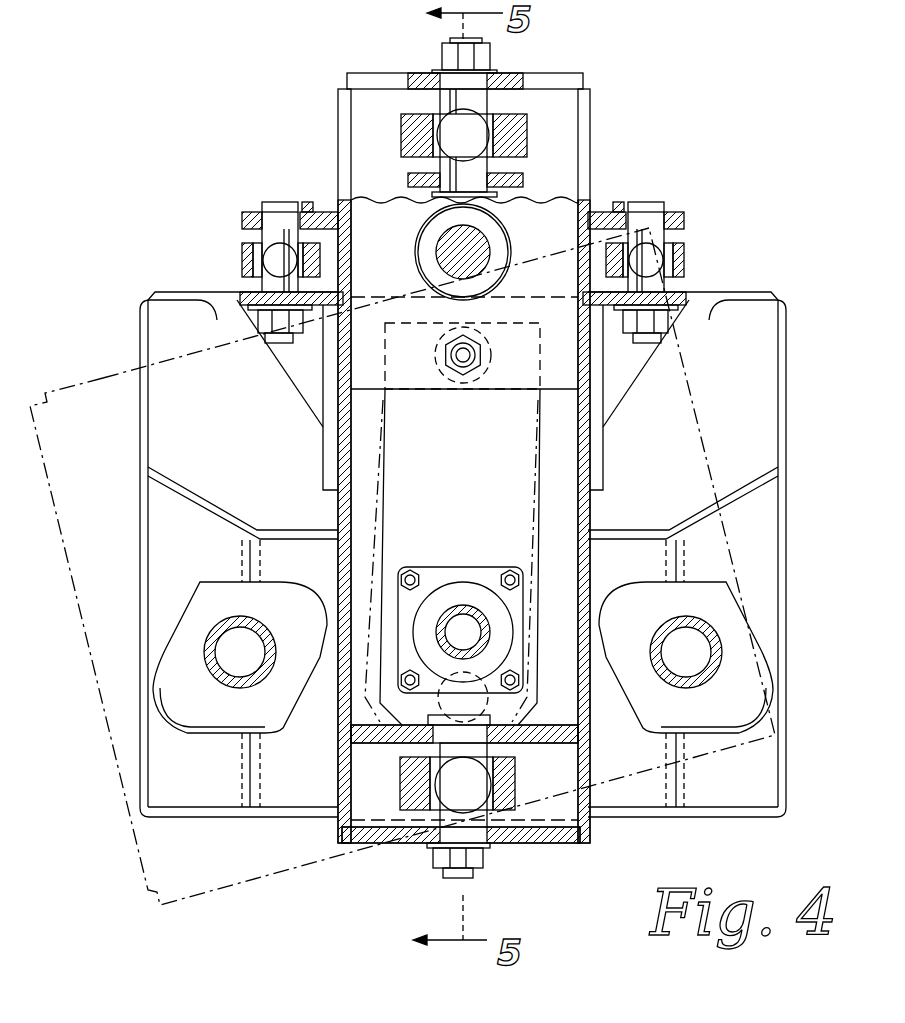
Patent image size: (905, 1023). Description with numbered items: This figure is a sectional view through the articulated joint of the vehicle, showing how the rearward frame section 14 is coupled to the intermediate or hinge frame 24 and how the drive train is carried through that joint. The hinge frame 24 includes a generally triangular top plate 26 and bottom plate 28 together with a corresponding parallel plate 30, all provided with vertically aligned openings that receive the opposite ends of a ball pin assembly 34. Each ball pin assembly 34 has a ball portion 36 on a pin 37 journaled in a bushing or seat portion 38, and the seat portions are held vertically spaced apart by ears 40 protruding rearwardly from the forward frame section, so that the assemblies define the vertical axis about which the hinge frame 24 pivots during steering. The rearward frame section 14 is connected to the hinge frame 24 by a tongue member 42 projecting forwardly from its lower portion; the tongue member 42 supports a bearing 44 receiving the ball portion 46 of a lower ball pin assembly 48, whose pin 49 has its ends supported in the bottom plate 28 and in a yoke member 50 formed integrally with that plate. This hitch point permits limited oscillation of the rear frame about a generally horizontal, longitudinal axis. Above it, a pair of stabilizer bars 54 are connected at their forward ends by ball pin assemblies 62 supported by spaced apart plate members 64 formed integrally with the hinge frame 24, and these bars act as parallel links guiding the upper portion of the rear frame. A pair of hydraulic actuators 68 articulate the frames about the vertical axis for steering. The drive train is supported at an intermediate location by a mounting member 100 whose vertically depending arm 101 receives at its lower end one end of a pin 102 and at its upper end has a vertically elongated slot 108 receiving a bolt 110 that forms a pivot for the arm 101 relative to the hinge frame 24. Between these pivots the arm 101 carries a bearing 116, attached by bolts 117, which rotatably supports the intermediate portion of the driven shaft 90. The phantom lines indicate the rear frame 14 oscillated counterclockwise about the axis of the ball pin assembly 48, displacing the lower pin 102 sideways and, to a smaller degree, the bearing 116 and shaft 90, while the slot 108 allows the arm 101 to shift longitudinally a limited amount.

The rearward frame section 14 is at (103, 375).
The intermediate or hinge frame 24 is at (592, 93).
The top plate 26 is at (565, 85).
The bottom plate 28 is at (548, 843).
The parallel plate 30 is at (523, 180).
The ball pin assembly 34 is at (433, 102).
The ball portion 36 is at (401, 135).
The pin 37 is at (442, 44).
The bushing or seat portion 38 is at (527, 120).
The ears 40 is at (527, 150).
The tongue member 42 is at (505, 785).
The bearing 44 is at (420, 770).
The ball portion 46 is at (440, 790).
The ball pin assembly 48 is at (430, 858).
The pin 49 is at (450, 880).
The yoke member 50 is at (582, 737).
The stabilizer bar 54 is at (250, 258).
The ball pin assembly 62 is at (270, 200).
The plate member 64 is at (243, 218).
The hydraulic actuator 68 is at (216, 630).
The driven shaft 90 is at (478, 612).
The mounting member or support structure 100 is at (540, 646).
The arm 101 is at (533, 585).
The pin 102 is at (500, 698).
The vertically elongated slot 108 is at (436, 355).
The bolt 110 is at (466, 380).
The bearing 116 is at (445, 567).
The bolts 117 is at (408, 570).